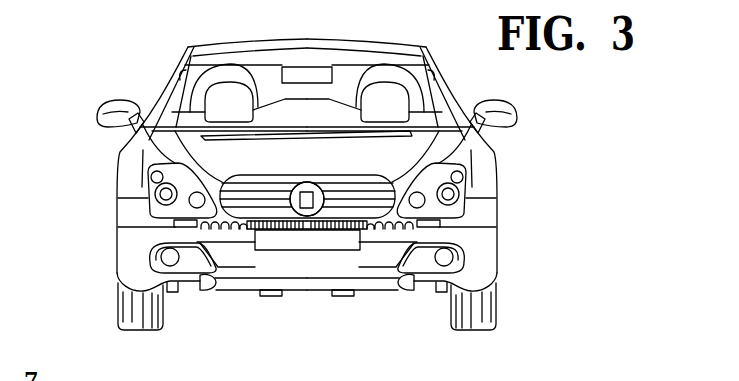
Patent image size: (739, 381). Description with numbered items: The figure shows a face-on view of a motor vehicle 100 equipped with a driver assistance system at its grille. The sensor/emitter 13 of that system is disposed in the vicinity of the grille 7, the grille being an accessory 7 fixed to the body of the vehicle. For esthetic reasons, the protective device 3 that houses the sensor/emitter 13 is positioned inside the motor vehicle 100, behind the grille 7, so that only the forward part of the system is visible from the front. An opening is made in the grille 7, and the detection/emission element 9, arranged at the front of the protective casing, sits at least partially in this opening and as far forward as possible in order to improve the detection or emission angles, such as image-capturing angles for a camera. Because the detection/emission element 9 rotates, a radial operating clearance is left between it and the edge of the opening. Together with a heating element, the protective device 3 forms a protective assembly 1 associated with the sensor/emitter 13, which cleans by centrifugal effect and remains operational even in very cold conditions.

The motor vehicle 100 is at (145, 65).
The protective assembly 1 is at (301, 168).
The sensor/emitter 13 is at (315, 176).
The protective device 3 is at (285, 200).
The detection/emission element 9 is at (307, 208).
The grille 7 is at (232, 188).